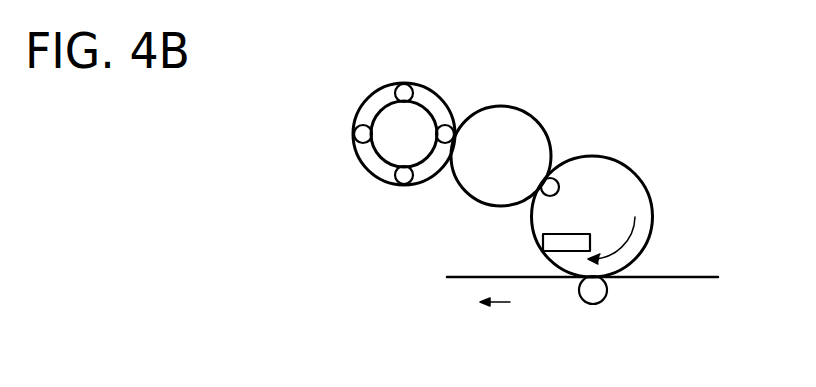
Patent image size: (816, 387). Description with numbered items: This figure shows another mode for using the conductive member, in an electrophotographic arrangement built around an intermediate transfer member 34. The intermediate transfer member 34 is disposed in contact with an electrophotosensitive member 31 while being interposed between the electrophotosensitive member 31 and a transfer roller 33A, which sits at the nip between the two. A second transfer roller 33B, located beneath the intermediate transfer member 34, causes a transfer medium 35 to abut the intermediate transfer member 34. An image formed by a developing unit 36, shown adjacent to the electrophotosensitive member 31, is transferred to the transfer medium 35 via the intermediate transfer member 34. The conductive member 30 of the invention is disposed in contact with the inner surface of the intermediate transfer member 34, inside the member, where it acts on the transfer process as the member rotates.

The conductive member 30 is at (563, 234).
The electrophotosensitive member 31 is at (542, 120).
The transfer roller 33A is at (558, 190).
The transfer roller 33B is at (592, 304).
The intermediate transfer member 34 is at (640, 173).
The transfer medium 35 is at (688, 277).
The developing unit 36 is at (440, 98).